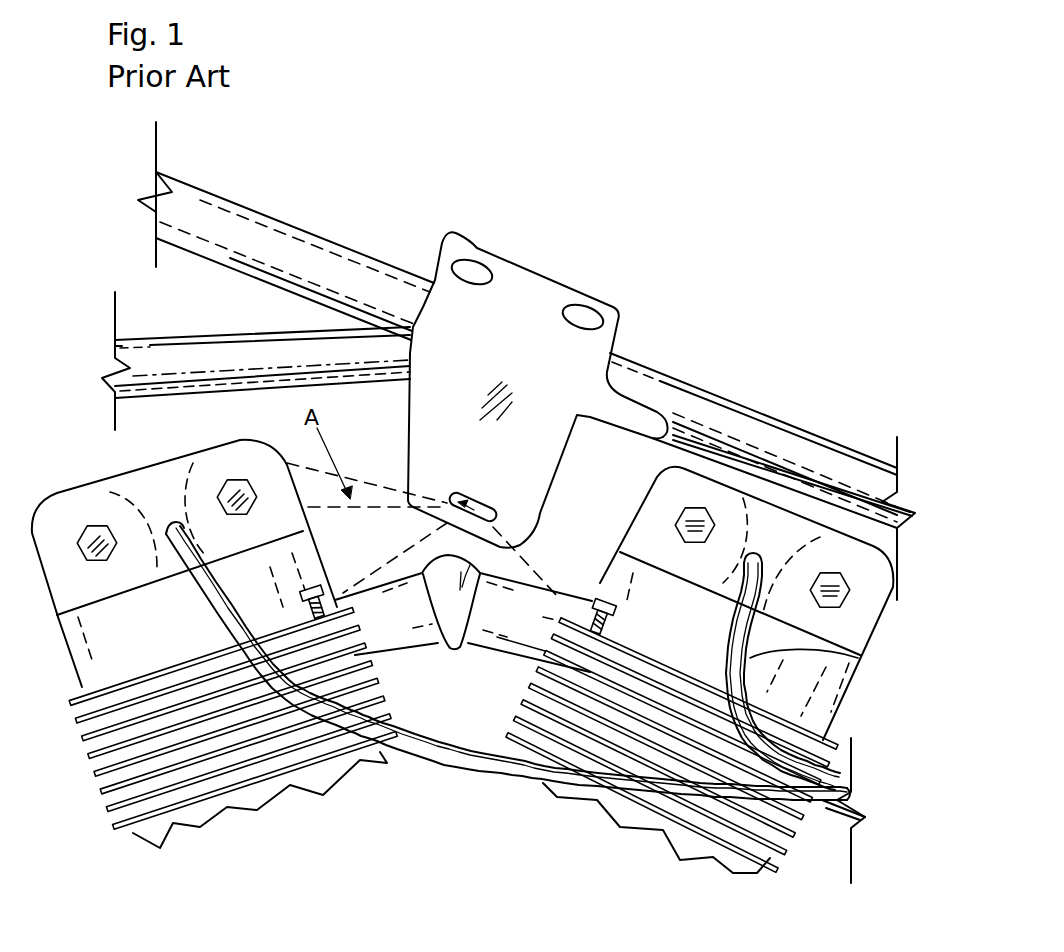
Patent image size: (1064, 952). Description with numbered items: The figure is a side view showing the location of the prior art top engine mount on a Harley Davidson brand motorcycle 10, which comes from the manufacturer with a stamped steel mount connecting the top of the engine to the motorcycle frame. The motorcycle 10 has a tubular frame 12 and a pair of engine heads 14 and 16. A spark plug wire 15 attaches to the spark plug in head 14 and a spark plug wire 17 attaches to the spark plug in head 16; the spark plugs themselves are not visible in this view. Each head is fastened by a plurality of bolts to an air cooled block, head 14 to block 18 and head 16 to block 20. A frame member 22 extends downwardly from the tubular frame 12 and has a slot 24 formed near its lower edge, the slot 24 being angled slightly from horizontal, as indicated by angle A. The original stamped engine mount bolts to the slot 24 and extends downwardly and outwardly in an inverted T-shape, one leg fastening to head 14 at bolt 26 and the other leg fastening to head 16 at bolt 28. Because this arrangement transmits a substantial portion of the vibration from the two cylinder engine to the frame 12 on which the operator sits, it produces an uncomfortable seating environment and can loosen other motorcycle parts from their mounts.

The motorcycle 10 is at (682, 317).
The frame 12 is at (755, 422).
The engine head 14 is at (840, 704).
The spark plug wire 15 is at (845, 651).
The engine head 16 is at (70, 643).
The spark plug wire 17 is at (200, 593).
The air cooled block 18 is at (783, 852).
The air cooled block 20 is at (123, 820).
The frame member 22 is at (408, 418).
The slot 24 is at (498, 508).
The bolt 26 is at (606, 600).
The bolt 28 is at (315, 586).